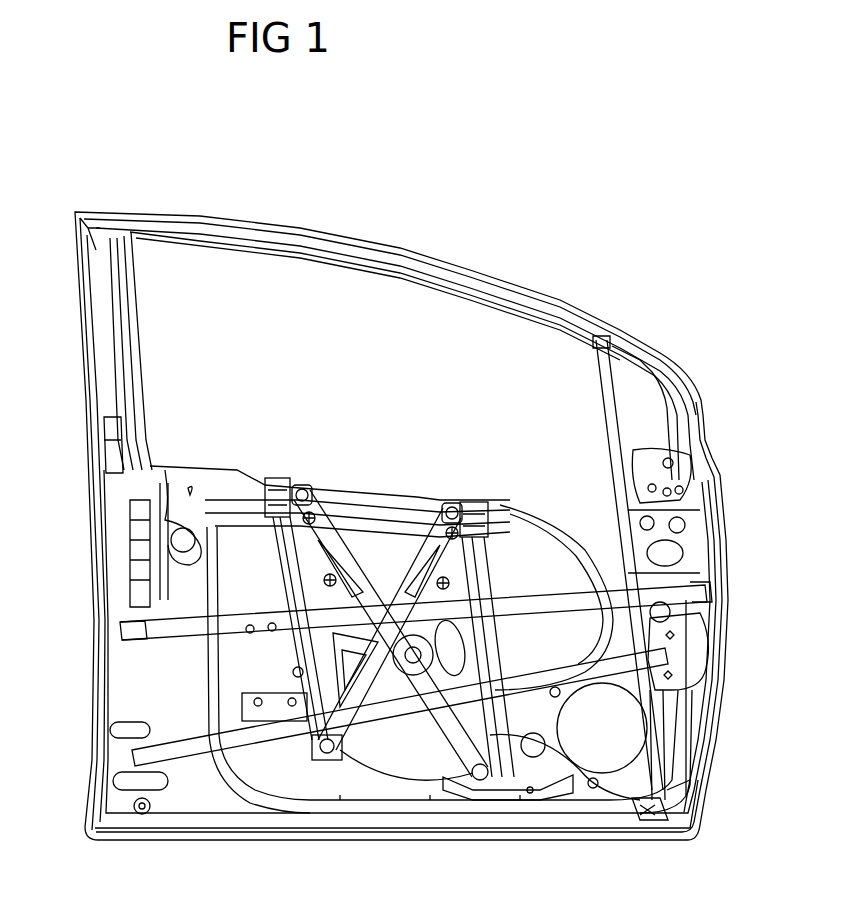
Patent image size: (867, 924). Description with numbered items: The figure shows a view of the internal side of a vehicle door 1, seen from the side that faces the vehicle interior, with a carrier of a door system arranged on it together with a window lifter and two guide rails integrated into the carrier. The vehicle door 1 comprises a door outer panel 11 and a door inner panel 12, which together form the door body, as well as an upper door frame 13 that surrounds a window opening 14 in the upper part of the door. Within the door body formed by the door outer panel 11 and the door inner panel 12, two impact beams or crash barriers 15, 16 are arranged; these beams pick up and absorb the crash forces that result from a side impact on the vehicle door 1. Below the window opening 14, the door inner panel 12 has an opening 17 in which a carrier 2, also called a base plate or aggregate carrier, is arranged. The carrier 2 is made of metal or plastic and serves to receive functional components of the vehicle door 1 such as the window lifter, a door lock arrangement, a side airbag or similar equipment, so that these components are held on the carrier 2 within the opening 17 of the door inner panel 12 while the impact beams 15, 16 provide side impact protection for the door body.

The vehicle door 1 is at (626, 244).
The carrier 2 is at (337, 487).
The door outer panel 11 is at (713, 540).
The door inner panel 12 is at (196, 810).
The upper door frame 13 is at (400, 253).
The window opening 14 is at (288, 272).
The impact beam 15 is at (125, 624).
The impact beam 16 is at (130, 753).
The opening 17 is at (660, 648).